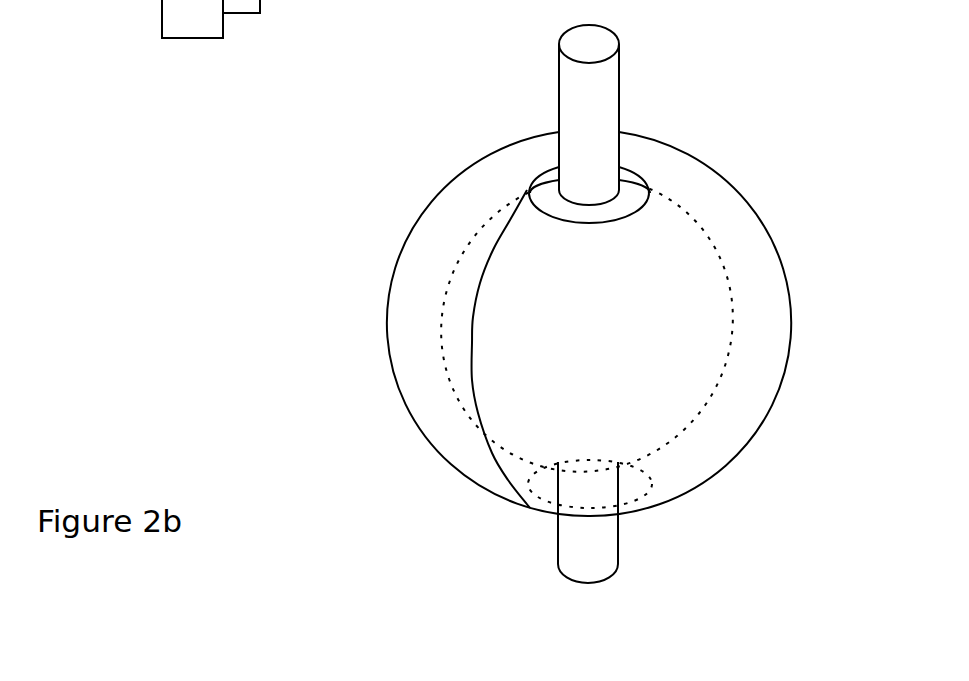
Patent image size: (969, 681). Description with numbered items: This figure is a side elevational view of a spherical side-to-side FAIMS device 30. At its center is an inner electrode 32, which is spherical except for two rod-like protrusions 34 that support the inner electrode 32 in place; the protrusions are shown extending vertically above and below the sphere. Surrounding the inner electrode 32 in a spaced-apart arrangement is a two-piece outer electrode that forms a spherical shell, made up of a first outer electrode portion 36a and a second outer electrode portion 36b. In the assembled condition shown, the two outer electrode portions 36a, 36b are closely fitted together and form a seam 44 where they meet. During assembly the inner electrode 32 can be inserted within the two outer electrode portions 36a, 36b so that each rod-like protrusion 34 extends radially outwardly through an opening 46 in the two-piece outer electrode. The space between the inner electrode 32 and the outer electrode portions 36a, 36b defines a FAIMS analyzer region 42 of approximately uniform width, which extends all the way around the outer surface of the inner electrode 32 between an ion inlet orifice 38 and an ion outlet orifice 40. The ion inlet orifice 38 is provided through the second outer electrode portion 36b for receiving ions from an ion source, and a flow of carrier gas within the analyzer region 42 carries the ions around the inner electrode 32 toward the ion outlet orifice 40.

The spherical side-to-side FAIMS device 30 is at (206, 263).
The inner electrode 32 is at (688, 428).
The rod-like protrusions 34 is at (620, 65).
The first outer electrode portion 36a is at (458, 173).
The second outer electrode portion 36b is at (766, 224).
The ion inlet orifice 38 is at (790, 312).
The ion outlet orifice 40 is at (386, 323).
The FAIMS analyzer region 42 is at (755, 388).
The seam 44 is at (625, 137).
The opening 46 is at (648, 178).